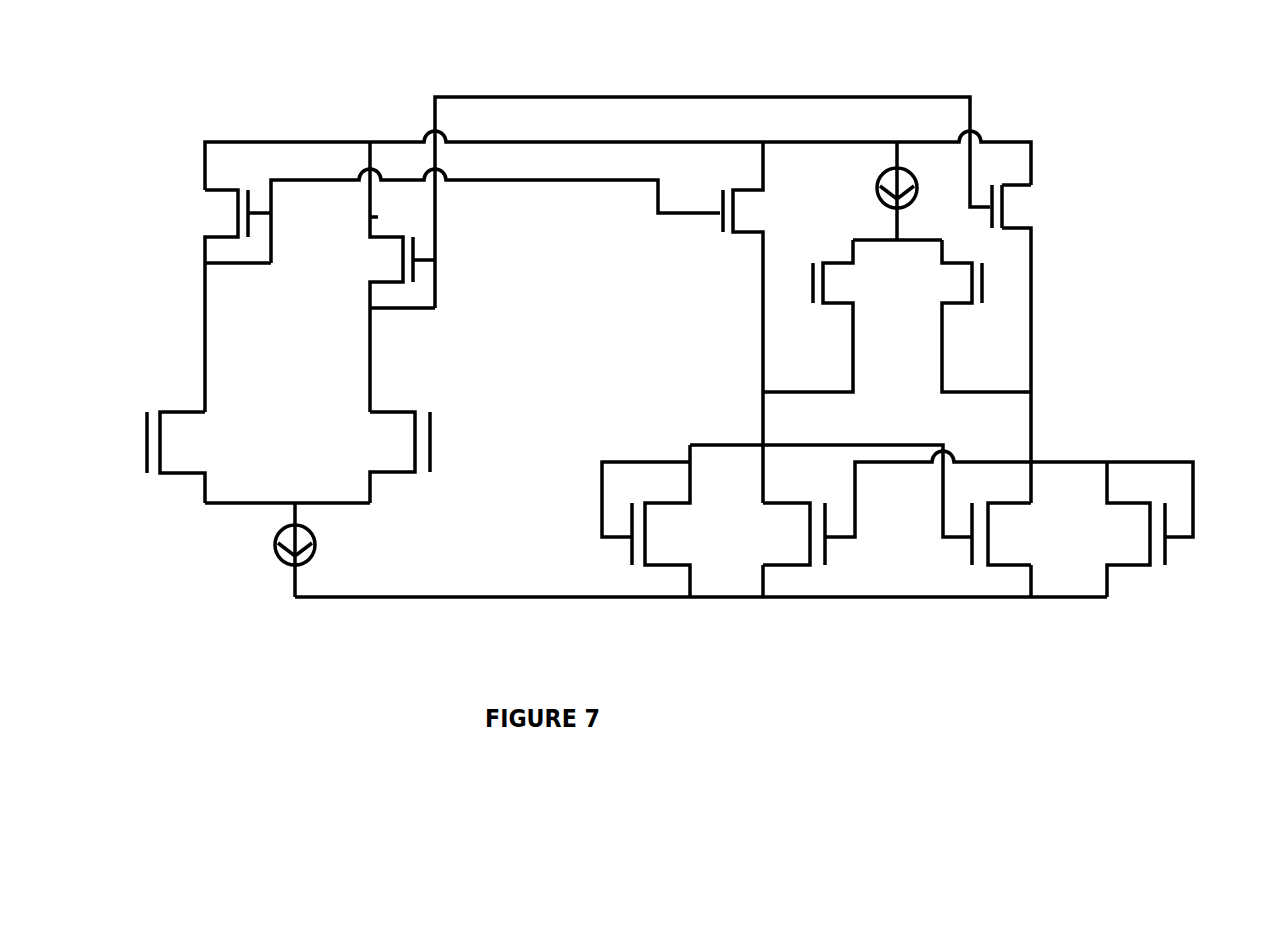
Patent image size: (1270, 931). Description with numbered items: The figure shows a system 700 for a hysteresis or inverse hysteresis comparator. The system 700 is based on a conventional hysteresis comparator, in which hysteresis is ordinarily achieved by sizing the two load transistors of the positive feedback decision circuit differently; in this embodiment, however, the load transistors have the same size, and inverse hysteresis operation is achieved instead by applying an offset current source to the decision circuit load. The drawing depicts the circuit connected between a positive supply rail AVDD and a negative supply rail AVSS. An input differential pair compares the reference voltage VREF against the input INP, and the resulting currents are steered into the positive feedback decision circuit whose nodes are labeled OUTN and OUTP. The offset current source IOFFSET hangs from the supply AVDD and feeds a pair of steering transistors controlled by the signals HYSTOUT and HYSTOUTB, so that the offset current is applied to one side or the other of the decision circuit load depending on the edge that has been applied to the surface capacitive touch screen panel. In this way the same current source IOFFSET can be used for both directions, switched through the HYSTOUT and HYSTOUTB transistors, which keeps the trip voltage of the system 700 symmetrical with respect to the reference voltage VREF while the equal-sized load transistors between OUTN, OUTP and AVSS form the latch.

The system 700 is at (639, 420).
The positive supply rail AVDD is at (618, 202).
The negative supply rail AVSS is at (701, 617).
The reference voltage input transistor VREF is at (147, 443).
The positive input transistor INP is at (430, 441).
The offset current source IOFFSET is at (860, 191).
The hystout HYSTOUT is at (813, 283).
The hystoutb HYSTOUTB is at (982, 283).
The negative output node OUTN is at (831, 445).
The positive output node OUTP is at (1009, 457).